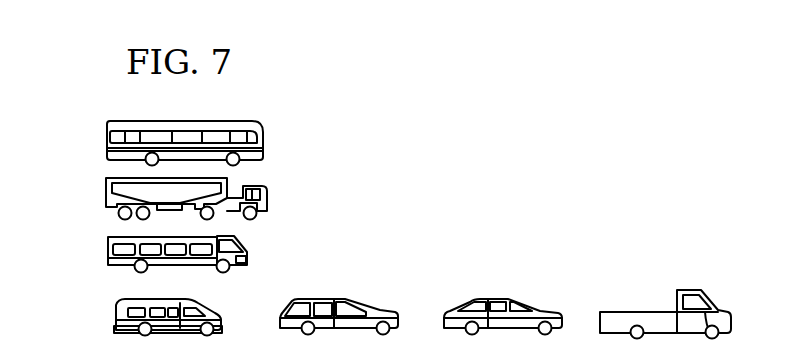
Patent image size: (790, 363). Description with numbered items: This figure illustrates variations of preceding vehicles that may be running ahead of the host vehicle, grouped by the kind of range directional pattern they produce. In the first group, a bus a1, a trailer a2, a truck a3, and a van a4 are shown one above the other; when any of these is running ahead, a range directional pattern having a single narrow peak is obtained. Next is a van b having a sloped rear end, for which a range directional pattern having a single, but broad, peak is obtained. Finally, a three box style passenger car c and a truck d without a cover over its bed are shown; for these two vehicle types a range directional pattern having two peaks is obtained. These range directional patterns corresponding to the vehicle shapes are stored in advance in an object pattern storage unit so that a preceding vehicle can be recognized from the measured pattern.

The bus a1 is at (150, 143).
The trailer a2 is at (152, 199).
The truck a3 is at (142, 254).
The van a4 is at (129, 317).
The van having a sloped rear end b is at (339, 294).
The three box style passenger car c is at (503, 294).
The truck without a cover over its bed d is at (665, 296).